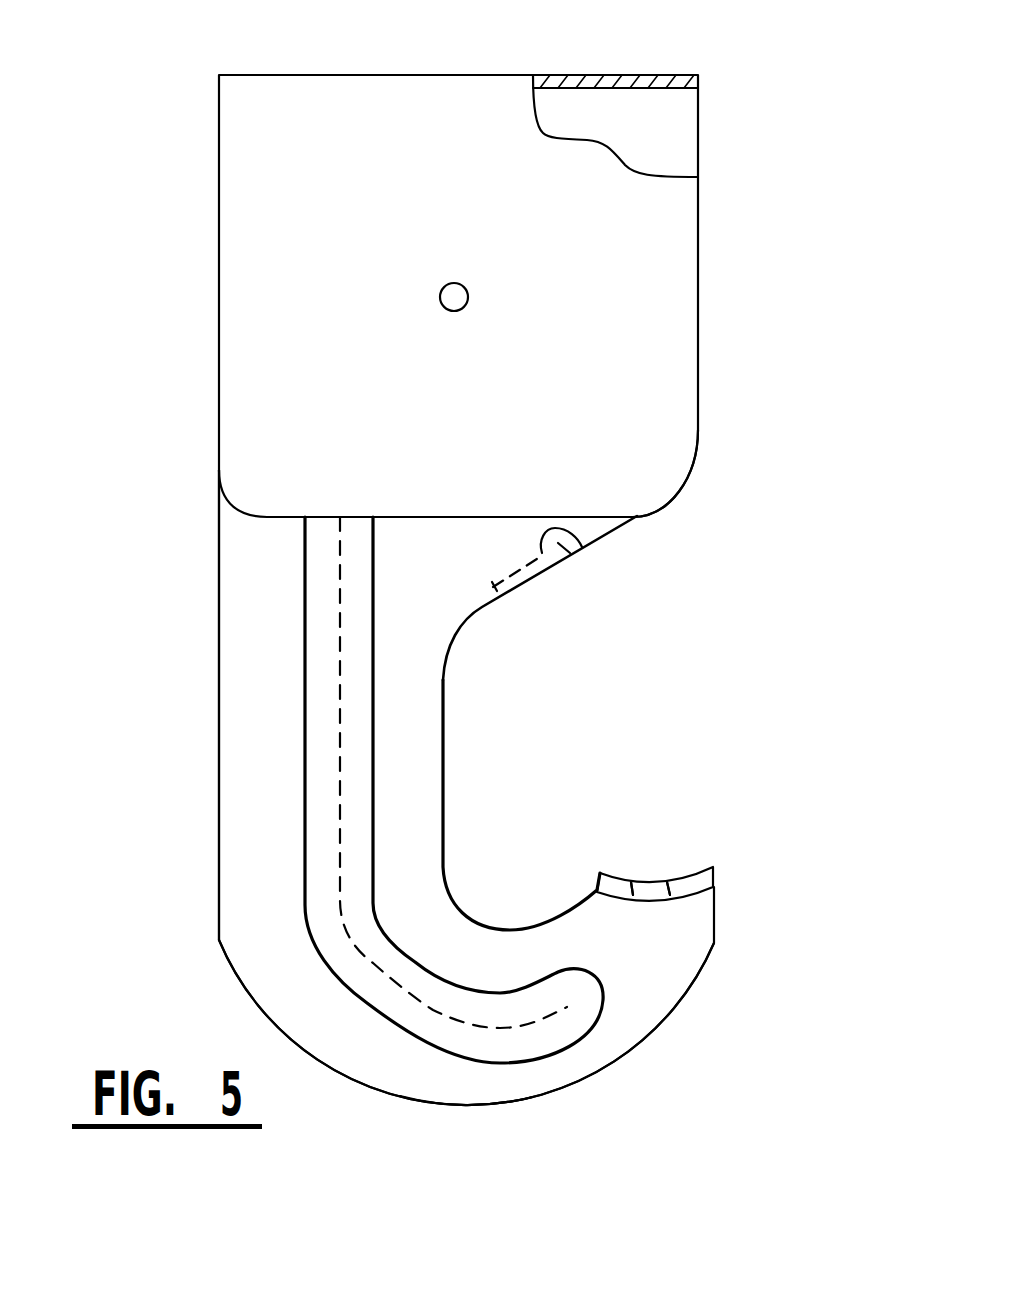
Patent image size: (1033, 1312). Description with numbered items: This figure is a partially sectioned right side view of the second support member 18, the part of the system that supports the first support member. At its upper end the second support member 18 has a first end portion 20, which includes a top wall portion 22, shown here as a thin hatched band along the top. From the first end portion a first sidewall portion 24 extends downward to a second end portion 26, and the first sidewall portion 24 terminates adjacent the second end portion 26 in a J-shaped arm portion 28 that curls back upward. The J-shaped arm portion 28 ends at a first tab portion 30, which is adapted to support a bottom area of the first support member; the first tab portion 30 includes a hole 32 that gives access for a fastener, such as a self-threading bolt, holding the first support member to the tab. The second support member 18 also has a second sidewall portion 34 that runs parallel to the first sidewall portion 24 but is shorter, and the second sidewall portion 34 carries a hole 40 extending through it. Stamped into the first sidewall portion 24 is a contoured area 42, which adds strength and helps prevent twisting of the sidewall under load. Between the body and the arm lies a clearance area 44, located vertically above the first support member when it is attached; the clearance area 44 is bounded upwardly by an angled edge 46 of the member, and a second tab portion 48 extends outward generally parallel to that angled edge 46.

The second support member 18 is at (204, 647).
The first end portion 20 is at (733, 214).
The top wall portion 22 is at (627, 74).
The first sidewall portion 24 is at (262, 577).
The second end portion 26 is at (615, 1066).
The J-shaped arm portion 28 is at (428, 1104).
The first tab portion 30 is at (678, 880).
The hole 32 is at (650, 880).
The second sidewall portion 34 is at (660, 432).
The hole 40 is at (459, 284).
The contoured area 42 is at (360, 763).
The clearance area 44 is at (573, 608).
The angled edge 46 is at (478, 605).
The second tab portion 48 is at (582, 547).